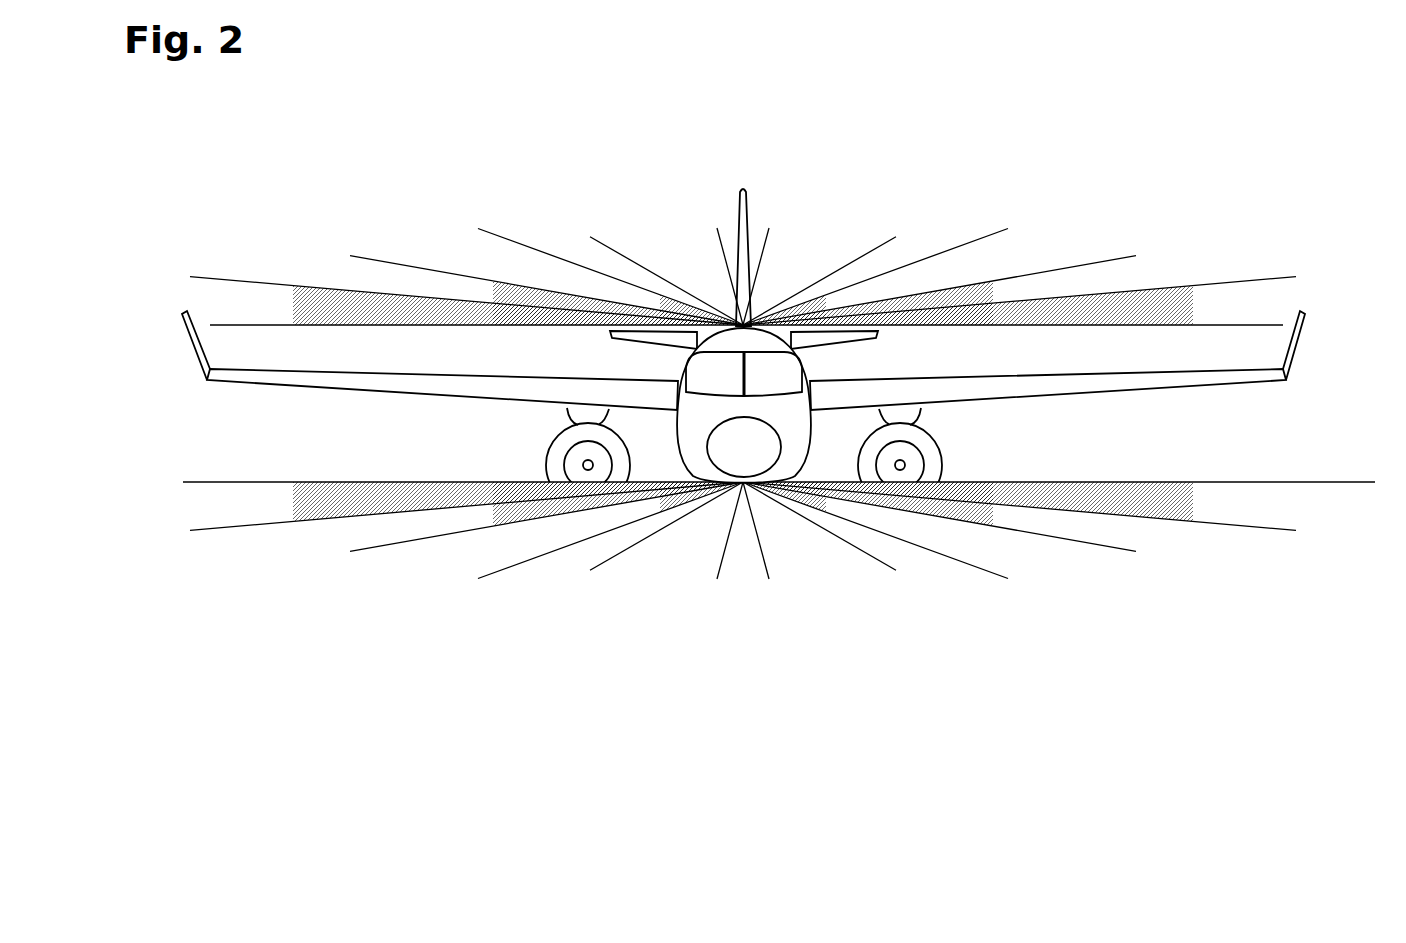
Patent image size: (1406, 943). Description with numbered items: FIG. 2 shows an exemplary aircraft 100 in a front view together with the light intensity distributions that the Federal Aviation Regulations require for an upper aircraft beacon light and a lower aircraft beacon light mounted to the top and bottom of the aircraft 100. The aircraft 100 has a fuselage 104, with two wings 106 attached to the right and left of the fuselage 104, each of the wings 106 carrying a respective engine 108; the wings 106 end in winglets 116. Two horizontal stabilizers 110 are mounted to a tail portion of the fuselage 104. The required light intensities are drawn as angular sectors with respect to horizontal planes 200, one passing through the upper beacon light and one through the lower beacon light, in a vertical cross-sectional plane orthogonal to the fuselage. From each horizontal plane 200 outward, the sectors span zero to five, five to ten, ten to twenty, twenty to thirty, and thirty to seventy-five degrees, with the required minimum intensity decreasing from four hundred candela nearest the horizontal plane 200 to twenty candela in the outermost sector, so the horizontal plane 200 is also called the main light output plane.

The aircraft 100 is at (1312, 224).
The fuselage 104 is at (795, 435).
The wings 106 is at (310, 382).
The engine 108 is at (558, 458).
The horizontal stabilizers 110 is at (660, 337).
The winglet 116 is at (193, 345).
The horizontal planes 200 is at (1256, 325).